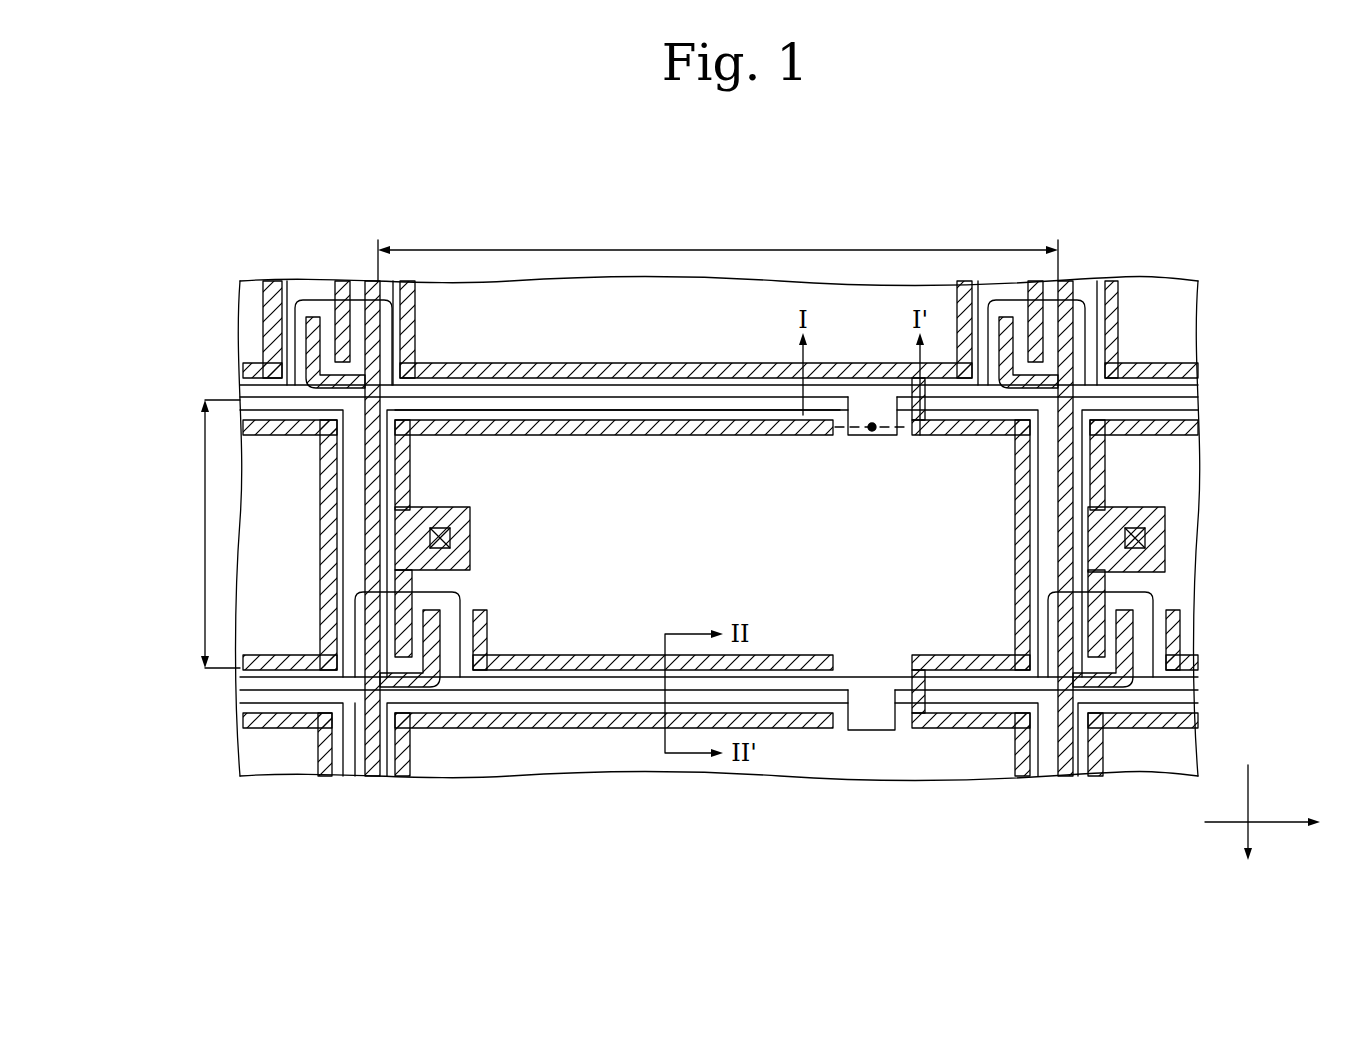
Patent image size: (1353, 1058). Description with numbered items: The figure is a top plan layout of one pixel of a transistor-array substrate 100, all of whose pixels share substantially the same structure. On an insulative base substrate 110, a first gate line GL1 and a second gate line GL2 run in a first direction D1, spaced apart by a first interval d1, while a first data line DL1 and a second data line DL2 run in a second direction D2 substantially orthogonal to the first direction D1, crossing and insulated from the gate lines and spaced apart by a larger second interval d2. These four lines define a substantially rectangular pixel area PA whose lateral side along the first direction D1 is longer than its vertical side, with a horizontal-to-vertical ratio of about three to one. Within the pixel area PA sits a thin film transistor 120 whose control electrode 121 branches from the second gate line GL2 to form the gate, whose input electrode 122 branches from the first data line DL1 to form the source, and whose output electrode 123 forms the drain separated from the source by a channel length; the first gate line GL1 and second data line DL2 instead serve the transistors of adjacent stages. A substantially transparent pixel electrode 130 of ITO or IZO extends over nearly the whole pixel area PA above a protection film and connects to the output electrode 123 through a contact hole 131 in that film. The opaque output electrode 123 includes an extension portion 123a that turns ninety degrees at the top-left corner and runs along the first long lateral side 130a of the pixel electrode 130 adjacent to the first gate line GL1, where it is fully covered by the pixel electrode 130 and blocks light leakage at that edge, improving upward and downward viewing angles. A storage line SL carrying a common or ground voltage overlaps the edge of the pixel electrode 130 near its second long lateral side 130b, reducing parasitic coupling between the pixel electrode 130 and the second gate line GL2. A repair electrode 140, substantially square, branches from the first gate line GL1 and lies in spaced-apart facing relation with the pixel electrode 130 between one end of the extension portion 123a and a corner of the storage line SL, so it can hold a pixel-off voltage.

The transistor-array substrate 100 is at (748, 171).
The base substrate 110 is at (1200, 476).
The thin film transistor 120 is at (495, 593).
The control electrode 121 is at (395, 592).
The input electrode 122 is at (440, 642).
The output electrode 123 is at (420, 578).
The extension portion 123a is at (588, 437).
The pixel electrode 130 is at (598, 678).
The first long lateral side 130a is at (713, 412).
The second long lateral side 130b is at (805, 655).
The contact hole 131 is at (500, 524).
The repair electrode 140 is at (872, 432).
The first data line DL1 is at (372, 281).
The second data line DL2 is at (1067, 281).
The first gate line GL1 is at (240, 387).
The second gate line GL2 is at (240, 683).
The storage line SL is at (905, 655).
The pixel area PA is at (1048, 512).
The first interval d1 is at (205, 534).
The second interval d2 is at (718, 252).
The first direction D1 is at (1276, 823).
The second direction D2 is at (1247, 832).